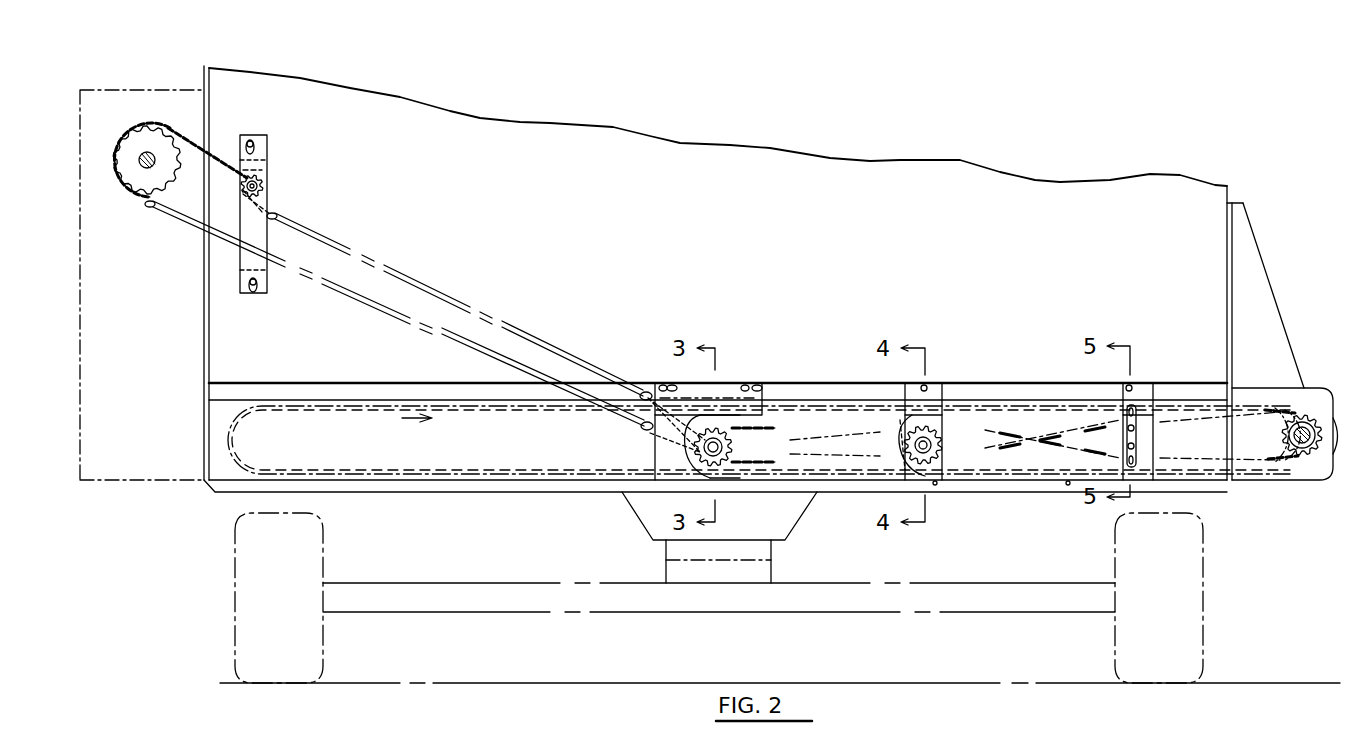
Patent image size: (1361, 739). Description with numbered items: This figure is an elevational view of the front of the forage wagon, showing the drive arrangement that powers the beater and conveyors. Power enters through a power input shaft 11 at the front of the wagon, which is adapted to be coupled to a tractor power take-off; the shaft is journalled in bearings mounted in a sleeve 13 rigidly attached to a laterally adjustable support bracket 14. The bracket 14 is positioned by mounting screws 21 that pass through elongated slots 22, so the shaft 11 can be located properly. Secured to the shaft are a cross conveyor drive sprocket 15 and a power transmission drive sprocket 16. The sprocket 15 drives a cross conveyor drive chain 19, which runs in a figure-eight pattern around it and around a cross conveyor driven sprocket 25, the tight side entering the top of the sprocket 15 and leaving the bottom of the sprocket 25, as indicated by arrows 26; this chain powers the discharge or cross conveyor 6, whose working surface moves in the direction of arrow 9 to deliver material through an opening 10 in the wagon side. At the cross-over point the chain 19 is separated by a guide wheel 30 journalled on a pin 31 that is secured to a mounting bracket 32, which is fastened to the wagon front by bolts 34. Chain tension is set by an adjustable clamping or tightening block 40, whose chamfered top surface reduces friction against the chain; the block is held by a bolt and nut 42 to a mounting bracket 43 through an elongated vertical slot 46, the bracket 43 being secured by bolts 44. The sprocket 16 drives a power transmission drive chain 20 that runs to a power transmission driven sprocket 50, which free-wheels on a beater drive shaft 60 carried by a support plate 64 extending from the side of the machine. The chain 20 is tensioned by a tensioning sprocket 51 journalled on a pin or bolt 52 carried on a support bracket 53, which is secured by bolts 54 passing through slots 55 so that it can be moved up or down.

The discharge or cross conveyor 6 is at (1266, 392).
The arrow 9 is at (417, 428).
The opening 10 is at (1318, 370).
The power input shaft 11 is at (708, 462).
The sleeve 13 is at (690, 450).
The laterally adjustable support bracket 14 is at (722, 385).
The cross conveyor drive sprocket 15 is at (723, 447).
The power transmission drive sprocket 16 is at (693, 428).
The cross conveyor drive chain 19 is at (768, 428).
The power transmission drive chain 20 is at (336, 244).
The mounting screws 21 is at (663, 384).
The elongated slots 22 is at (673, 385).
The cross conveyor driven sprocket 25 is at (1280, 434).
The arrows 26 is at (836, 423).
The guide wheel 30 is at (902, 445).
The pin 31 is at (945, 432).
The mounting bracket 32 is at (940, 390).
The bolts 34 is at (927, 385).
The adjustable clamping or tightening block 40 is at (1105, 420).
The nut 42 is at (1100, 446).
The mounting bracket 43 is at (1148, 392).
The bolts 44 is at (1132, 385).
The elongated vertical slot 46 is at (1136, 462).
The power transmission driven sprocket 50 is at (170, 193).
The tensioning sprocket 51 is at (267, 190).
The pin or bolt 52 is at (258, 186).
The support bracket 53 is at (266, 164).
The bolts 54 is at (254, 148).
The slots 55 is at (251, 142).
The beater drive shaft 60 is at (149, 151).
The support plate 64 is at (134, 470).